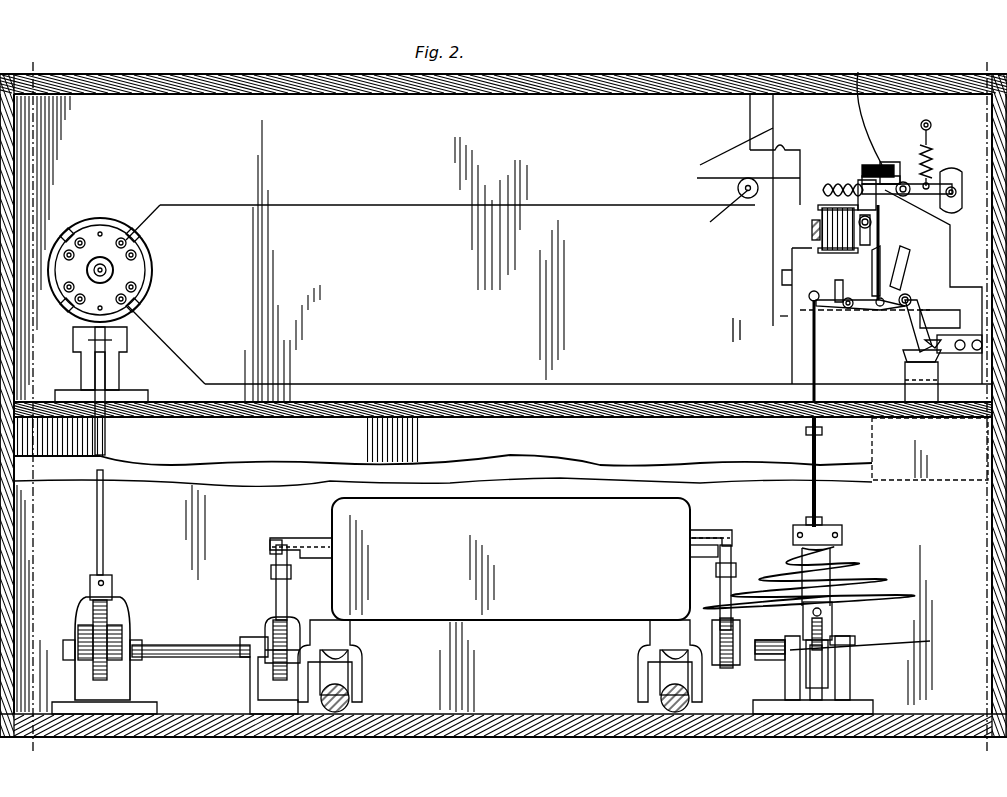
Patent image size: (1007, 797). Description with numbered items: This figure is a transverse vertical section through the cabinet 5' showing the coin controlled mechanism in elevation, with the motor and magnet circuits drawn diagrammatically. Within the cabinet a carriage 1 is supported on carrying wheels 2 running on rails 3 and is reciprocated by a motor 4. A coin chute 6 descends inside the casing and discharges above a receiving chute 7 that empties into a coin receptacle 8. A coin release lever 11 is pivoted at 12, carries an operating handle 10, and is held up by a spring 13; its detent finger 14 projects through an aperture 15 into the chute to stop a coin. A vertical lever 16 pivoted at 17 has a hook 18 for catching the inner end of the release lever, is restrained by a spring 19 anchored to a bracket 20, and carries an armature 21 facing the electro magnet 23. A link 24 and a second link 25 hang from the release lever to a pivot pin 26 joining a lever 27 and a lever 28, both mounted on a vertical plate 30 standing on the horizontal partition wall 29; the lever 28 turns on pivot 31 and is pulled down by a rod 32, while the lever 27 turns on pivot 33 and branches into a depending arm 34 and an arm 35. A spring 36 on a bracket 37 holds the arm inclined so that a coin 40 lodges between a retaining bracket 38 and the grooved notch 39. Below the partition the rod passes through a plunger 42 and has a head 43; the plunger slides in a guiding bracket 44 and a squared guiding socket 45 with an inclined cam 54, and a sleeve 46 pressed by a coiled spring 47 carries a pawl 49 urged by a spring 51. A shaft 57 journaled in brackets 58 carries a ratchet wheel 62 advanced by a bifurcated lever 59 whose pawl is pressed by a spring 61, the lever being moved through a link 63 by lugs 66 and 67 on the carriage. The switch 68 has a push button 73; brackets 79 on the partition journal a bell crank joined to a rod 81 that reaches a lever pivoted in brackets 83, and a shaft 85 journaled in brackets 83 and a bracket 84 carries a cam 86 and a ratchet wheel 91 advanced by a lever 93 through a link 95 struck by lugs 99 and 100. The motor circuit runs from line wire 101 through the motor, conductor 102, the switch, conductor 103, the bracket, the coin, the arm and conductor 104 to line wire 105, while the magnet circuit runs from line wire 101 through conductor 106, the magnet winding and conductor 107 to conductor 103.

The carriage or frame 1 is at (511, 559).
The carrying wheels 2 is at (348, 668).
The rails 3 is at (337, 712).
The motor 4 is at (6, 748).
The casing or cabinet 5' is at (970, 582).
The coin slot or chute 6 is at (945, 250).
The receiving chute 7 is at (903, 376).
The coin receptacle 8 is at (905, 470).
The operating handle 10 is at (968, 152).
The coin release lever 11 is at (905, 165).
The pivot 12 is at (905, 198).
The spring 13 is at (932, 152).
The detent finger 14 is at (868, 64).
The aperture 15 is at (868, 168).
The lever 16 is at (860, 190).
The pivot 17 is at (870, 230).
The hook 18 is at (862, 178).
The spring 19 is at (822, 192).
The bracket 20 is at (822, 225).
The armature 21 is at (870, 252).
The electro magnet 23 is at (743, 314).
The link 24 is at (930, 266).
The second link 25 is at (818, 362).
The pivot pin 26 is at (882, 308).
The lever 27 is at (893, 283).
The lever 28 is at (846, 311).
The horizontal partition wall 29 is at (575, 403).
The vertical plate 30 is at (863, 396).
The pivot 31 is at (845, 280).
The rod or link 32 is at (760, 369).
The pivot 33 is at (910, 299).
The depending arm 34 is at (923, 316).
The arm 35 is at (908, 260).
The spring 36 is at (822, 262).
The bracket 37 is at (742, 330).
The retaining bracket 38 is at (968, 356).
The grooved notch 39 is at (968, 318).
The coin 40 is at (930, 358).
The plunger 42 is at (812, 450).
The head 43 is at (805, 431).
The guiding bracket 44 is at (792, 530).
The squared guiding socket 45 is at (815, 692).
The sleeve 46 is at (832, 612).
The coiled spring 47 is at (835, 568).
The pawl 49 is at (828, 668).
The spring 51 is at (835, 635).
The inclined surface or cam 54 is at (850, 680).
The shaft 57 is at (770, 638).
The brackets 58 is at (753, 685).
The bifurcated lever 59 is at (732, 592).
The spring 61 is at (871, 640).
The ratchet wheel 62 is at (726, 668).
The link 63 is at (738, 568).
The lug 66 is at (712, 555).
The lug 67 is at (708, 528).
The switch 68 is at (143, 271).
The push button 73 is at (90, 262).
The brackets 79 is at (118, 372).
The link or rod 81 is at (105, 437).
The brackets 83 is at (75, 686).
The bracket 84 is at (250, 683).
The shaft 85 is at (192, 644).
The cam 86 is at (100, 680).
The ratchet wheel 91 is at (281, 680).
The lever 93 is at (275, 598).
The link 95 is at (270, 572).
The lug 99 is at (268, 555).
The lug 100 is at (296, 532).
The line wire 101 is at (748, 133).
The conductor 102 is at (403, 204).
The conductor 103 is at (434, 383).
The conductor 104 is at (790, 262).
The line wire 105 is at (716, 150).
The conductor 106 is at (735, 194).
The conductor 107 is at (792, 310).